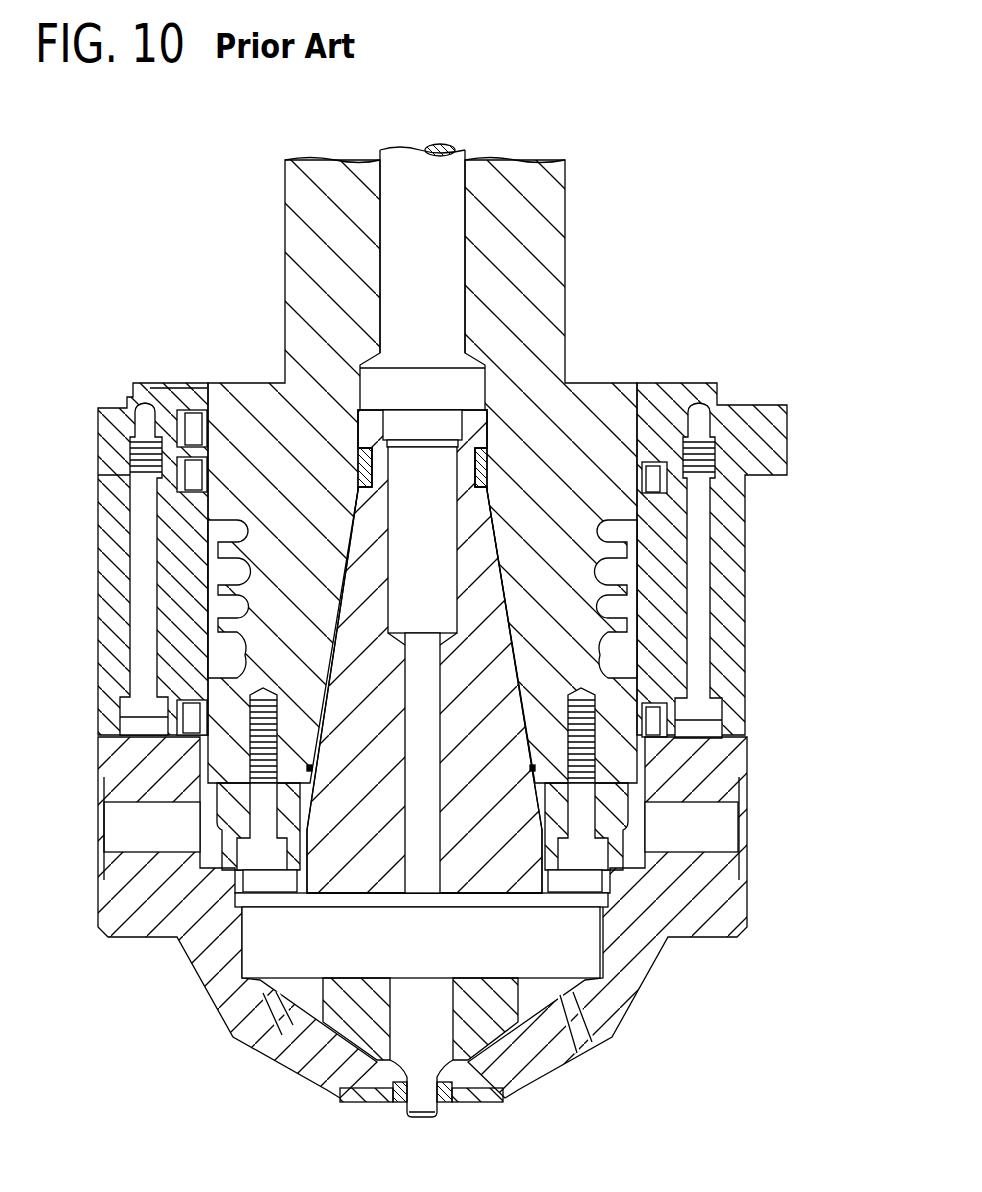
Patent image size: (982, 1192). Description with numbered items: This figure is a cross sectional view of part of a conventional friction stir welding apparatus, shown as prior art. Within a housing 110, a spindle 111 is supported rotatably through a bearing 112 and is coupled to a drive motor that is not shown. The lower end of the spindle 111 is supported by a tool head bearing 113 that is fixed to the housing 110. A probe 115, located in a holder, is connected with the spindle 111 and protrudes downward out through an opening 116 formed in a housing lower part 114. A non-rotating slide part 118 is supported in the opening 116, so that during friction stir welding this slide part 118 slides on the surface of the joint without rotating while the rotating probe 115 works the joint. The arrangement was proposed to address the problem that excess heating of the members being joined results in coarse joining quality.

The housing 110 is at (665, 383).
The spindle 111 is at (488, 880).
The bearing 112 is at (653, 480).
The tool head bearing 113 is at (577, 957).
The housing lower part 114 is at (635, 940).
The probe 115 is at (437, 1023).
The opening 116 is at (403, 1103).
The non-rotating slide part 118 is at (443, 1103).